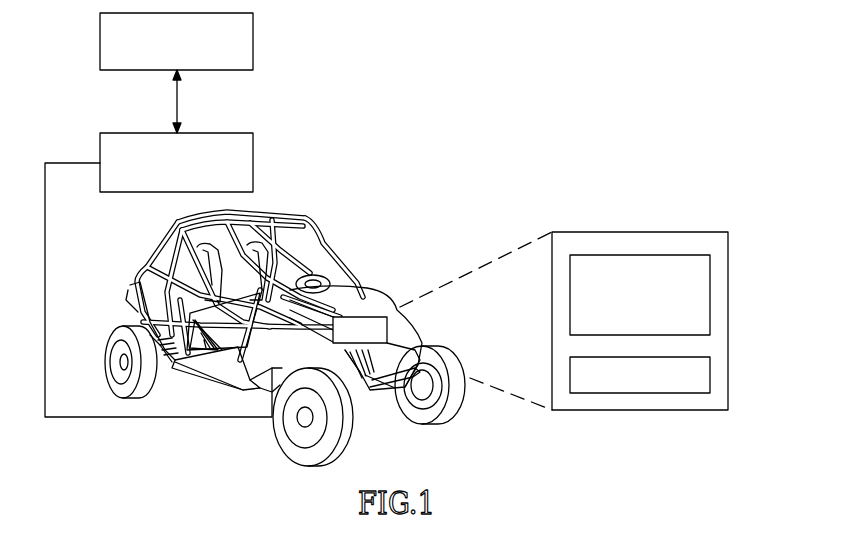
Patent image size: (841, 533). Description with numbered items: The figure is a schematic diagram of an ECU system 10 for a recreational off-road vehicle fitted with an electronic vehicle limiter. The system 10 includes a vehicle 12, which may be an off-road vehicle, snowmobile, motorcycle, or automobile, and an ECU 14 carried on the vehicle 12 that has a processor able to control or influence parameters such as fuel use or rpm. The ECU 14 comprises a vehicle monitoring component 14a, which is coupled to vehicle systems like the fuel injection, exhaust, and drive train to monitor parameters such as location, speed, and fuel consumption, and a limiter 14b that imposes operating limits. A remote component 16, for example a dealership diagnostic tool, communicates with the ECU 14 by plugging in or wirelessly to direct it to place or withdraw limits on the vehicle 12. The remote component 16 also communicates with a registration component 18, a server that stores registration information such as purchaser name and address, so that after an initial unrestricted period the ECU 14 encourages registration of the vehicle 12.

The ECU system 10 is at (598, 58).
The vehicle 12 is at (285, 321).
The ECU 14 is at (370, 316).
The vehicle monitoring component 14a is at (633, 255).
The limiter 14b is at (655, 393).
The remote component 16 is at (253, 157).
The registration component 18 is at (253, 43).